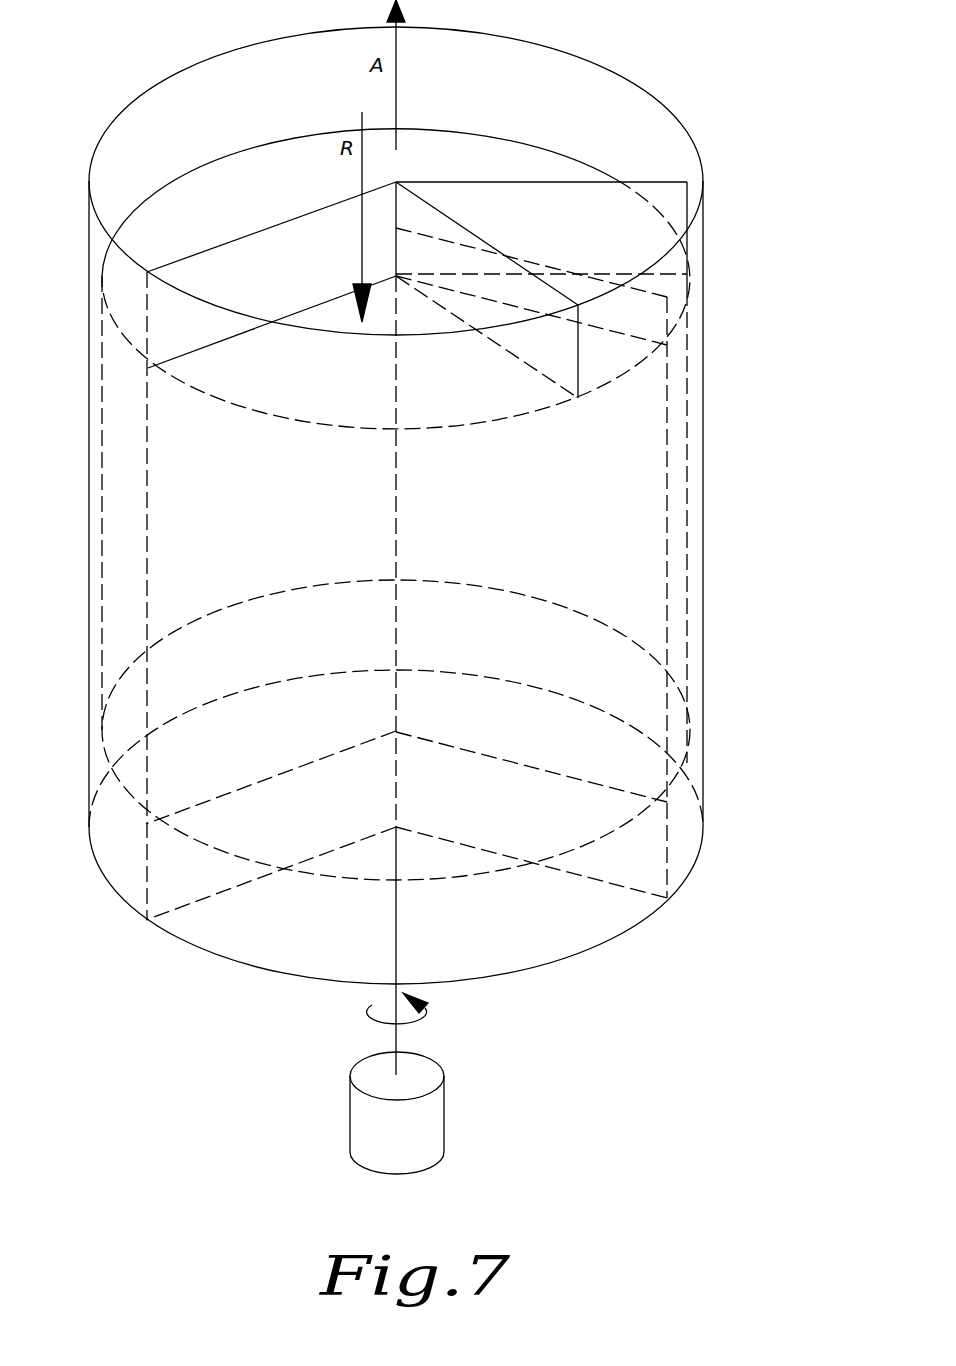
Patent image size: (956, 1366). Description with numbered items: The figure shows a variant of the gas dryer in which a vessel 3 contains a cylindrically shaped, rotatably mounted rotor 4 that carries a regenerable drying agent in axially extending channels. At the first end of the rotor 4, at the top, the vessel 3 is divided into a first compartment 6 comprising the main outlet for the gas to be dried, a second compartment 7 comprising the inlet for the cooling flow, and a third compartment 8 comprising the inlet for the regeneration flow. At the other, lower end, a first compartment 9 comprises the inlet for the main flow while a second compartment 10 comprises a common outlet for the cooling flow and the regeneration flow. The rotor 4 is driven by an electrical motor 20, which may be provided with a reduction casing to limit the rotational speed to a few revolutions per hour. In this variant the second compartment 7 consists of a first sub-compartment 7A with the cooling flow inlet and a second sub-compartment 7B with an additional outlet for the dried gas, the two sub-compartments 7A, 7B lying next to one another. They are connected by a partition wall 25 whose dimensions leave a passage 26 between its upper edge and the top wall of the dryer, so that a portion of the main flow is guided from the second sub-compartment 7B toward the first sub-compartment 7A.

The vessel 3 is at (703, 525).
The rotor 4 is at (277, 538).
The first compartment 6 is at (220, 225).
The second compartment 7 is at (667, 185).
The first sub-compartment 7A is at (630, 365).
The second sub-compartment 7B is at (648, 257).
The third compartment 8 is at (300, 385).
The first compartment 9 is at (126, 858).
The second compartment 10 is at (302, 950).
The electrical motor 20 is at (428, 1118).
The partition wall 25 is at (642, 305).
The passage 26 is at (655, 280).